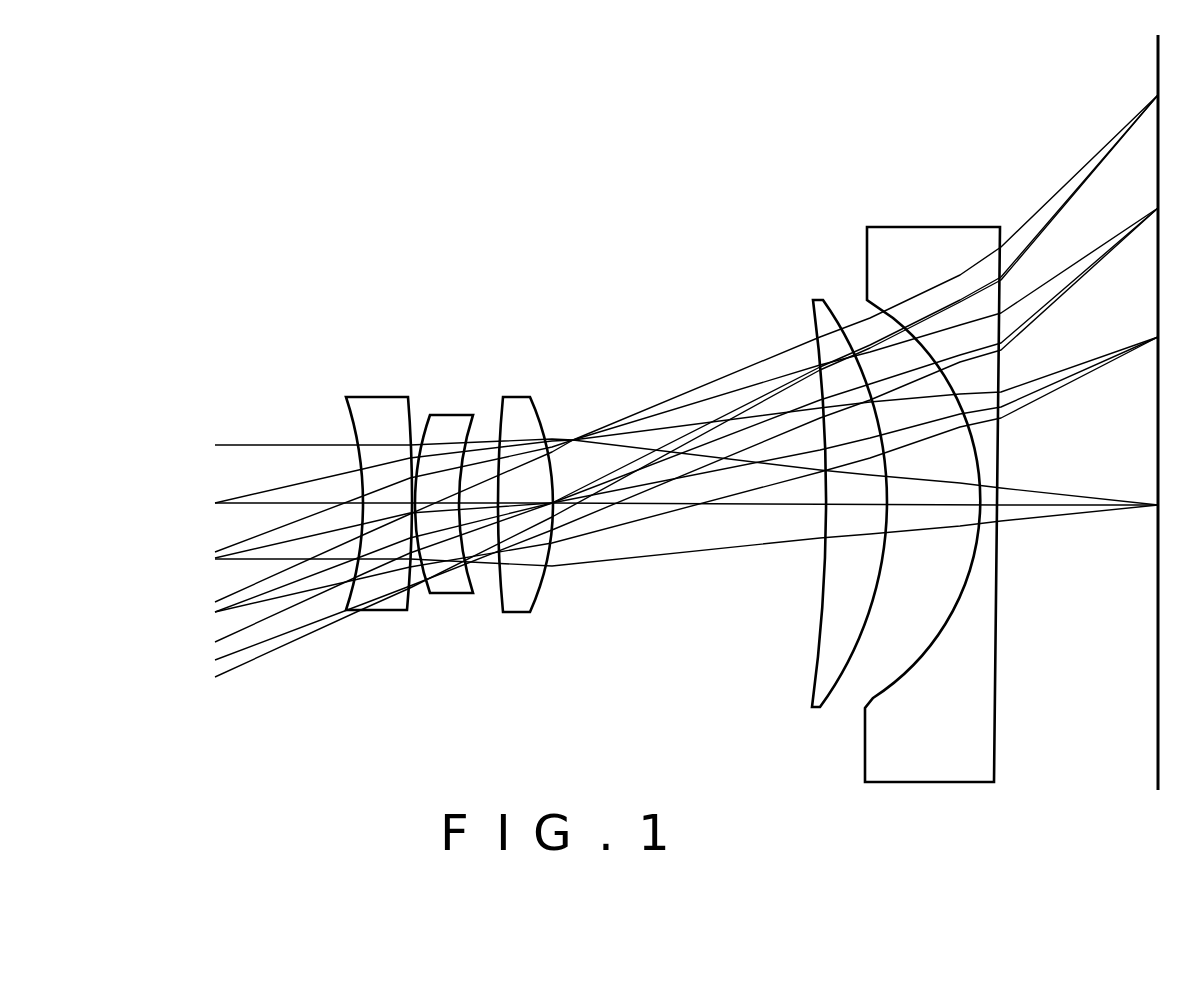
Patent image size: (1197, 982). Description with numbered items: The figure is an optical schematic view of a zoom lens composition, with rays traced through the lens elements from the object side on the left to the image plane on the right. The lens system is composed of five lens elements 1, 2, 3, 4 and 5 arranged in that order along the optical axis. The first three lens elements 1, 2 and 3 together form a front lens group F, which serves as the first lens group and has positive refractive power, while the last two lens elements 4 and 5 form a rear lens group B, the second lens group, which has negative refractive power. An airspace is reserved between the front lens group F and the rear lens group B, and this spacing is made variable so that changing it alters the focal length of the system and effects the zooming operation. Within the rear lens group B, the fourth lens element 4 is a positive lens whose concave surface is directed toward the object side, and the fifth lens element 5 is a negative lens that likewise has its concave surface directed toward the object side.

The first lens element 1 is at (388, 403).
The second lens element 2 is at (455, 415).
The third lens element 3 is at (527, 403).
The fourth lens element 4 is at (823, 313).
The fifth lens element 5 is at (955, 250).
The front lens group F is at (543, 276).
The rear lens group B is at (1042, 108).